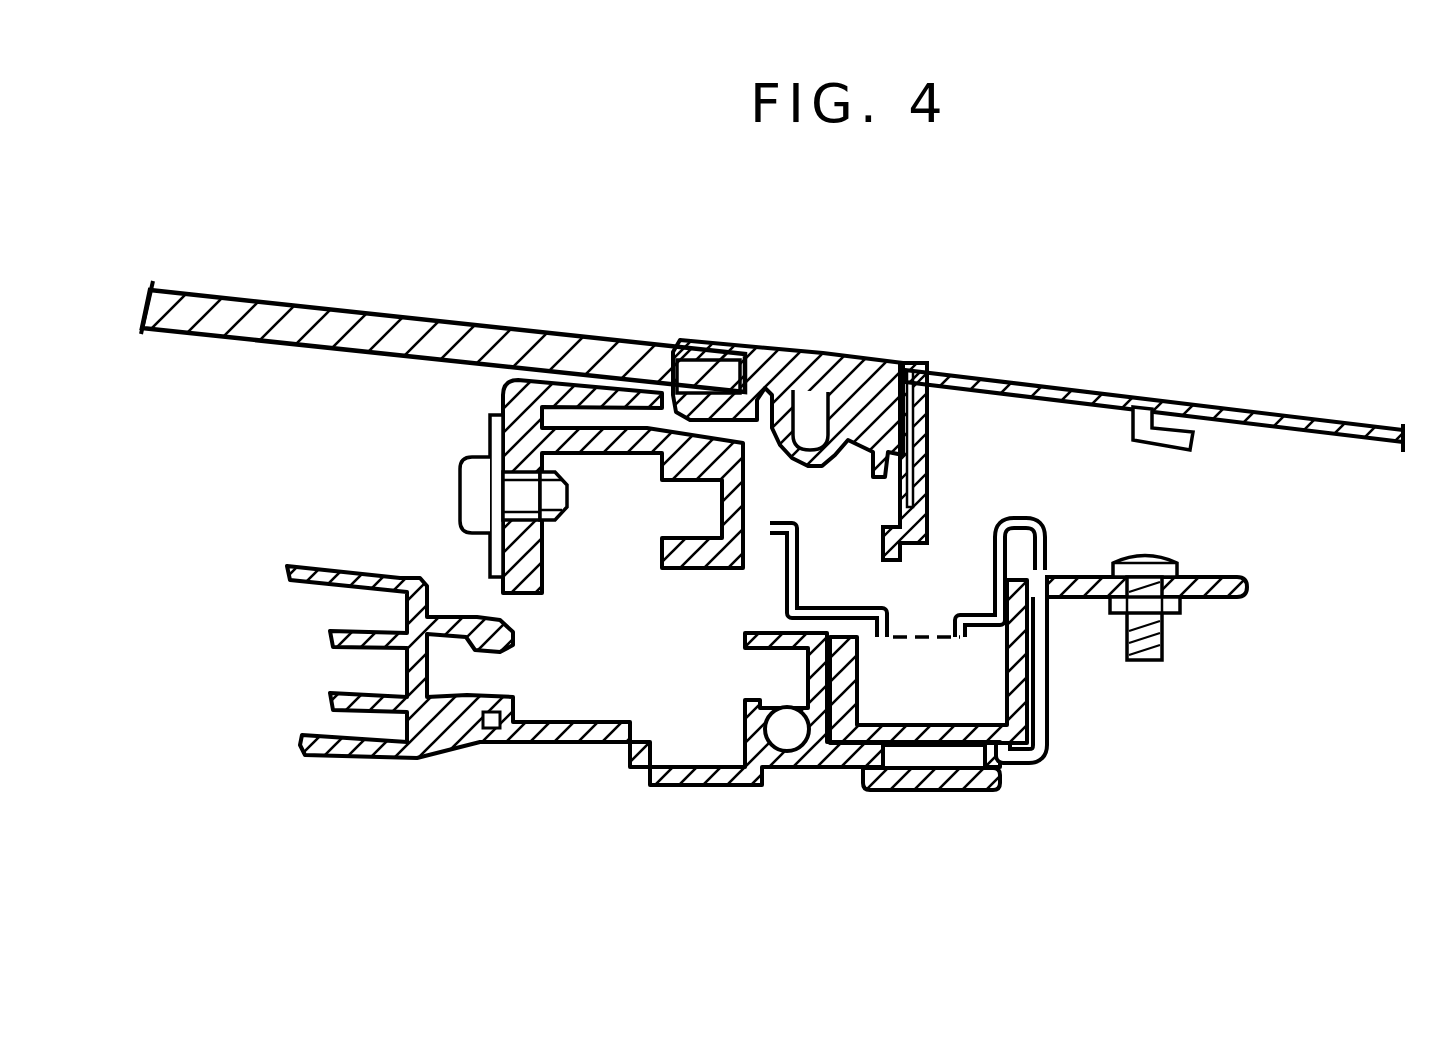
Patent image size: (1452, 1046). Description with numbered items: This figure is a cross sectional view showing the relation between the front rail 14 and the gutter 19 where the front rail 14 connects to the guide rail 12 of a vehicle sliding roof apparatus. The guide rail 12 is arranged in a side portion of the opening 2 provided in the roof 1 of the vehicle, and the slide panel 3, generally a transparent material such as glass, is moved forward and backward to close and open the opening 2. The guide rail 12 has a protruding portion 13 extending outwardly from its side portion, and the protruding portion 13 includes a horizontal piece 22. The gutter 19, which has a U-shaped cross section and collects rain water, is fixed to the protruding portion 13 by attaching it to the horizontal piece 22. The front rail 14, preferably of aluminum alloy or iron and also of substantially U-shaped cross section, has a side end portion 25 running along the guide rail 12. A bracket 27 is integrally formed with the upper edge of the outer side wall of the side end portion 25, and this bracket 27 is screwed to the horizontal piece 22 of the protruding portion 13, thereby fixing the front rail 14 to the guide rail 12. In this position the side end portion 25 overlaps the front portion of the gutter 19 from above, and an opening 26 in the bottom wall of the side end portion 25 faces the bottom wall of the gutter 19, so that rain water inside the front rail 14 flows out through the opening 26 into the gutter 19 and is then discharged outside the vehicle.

The roof 1 is at (1255, 410).
The opening 2 is at (870, 385).
The slide panel 3 is at (473, 327).
The guide rail 12 is at (684, 787).
The protruding portion 13 is at (967, 790).
The front rail 14 is at (1020, 523).
The gutter 19 is at (912, 750).
The horizontal piece 22 is at (1237, 600).
The side end portion 25 is at (780, 565).
The opening 26 is at (920, 640).
The bracket 27 is at (1200, 576).